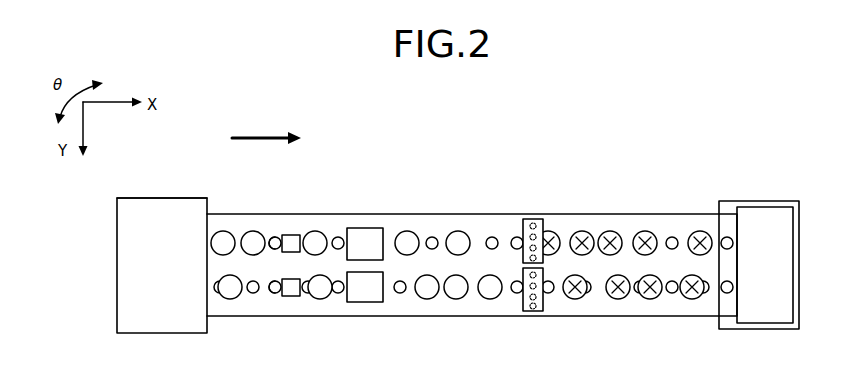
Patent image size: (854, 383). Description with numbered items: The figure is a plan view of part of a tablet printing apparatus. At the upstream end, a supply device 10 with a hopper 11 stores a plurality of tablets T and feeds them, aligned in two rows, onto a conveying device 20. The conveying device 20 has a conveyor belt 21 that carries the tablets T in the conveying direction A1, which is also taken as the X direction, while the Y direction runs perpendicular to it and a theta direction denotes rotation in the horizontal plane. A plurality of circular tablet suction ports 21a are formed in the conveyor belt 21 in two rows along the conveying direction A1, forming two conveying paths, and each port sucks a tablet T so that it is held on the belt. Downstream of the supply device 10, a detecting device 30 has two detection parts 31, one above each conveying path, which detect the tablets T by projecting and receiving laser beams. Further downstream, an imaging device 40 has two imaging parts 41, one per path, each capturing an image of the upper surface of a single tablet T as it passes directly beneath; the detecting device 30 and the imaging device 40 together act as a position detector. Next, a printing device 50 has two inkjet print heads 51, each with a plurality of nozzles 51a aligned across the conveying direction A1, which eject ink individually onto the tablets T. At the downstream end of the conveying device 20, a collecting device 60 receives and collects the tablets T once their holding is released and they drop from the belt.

The supply device 10 is at (152, 176).
The hopper 11 is at (188, 198).
The conveying device 20 is at (228, 178).
The tablet T is at (221, 231).
The conveyor belt 21 is at (279, 256).
The tablet suction port 21a is at (276, 238).
The detection part 31 is at (292, 235).
The detecting device 30 is at (302, 240).
The imaging device 40 is at (392, 242).
The imaging part 41 is at (365, 228).
The printing device 50 is at (538, 248).
The inkjet print head 51 is at (509, 267).
The nozzle 51a is at (525, 214).
The collecting device 60 is at (768, 201).
The conveying direction A1 is at (262, 136).